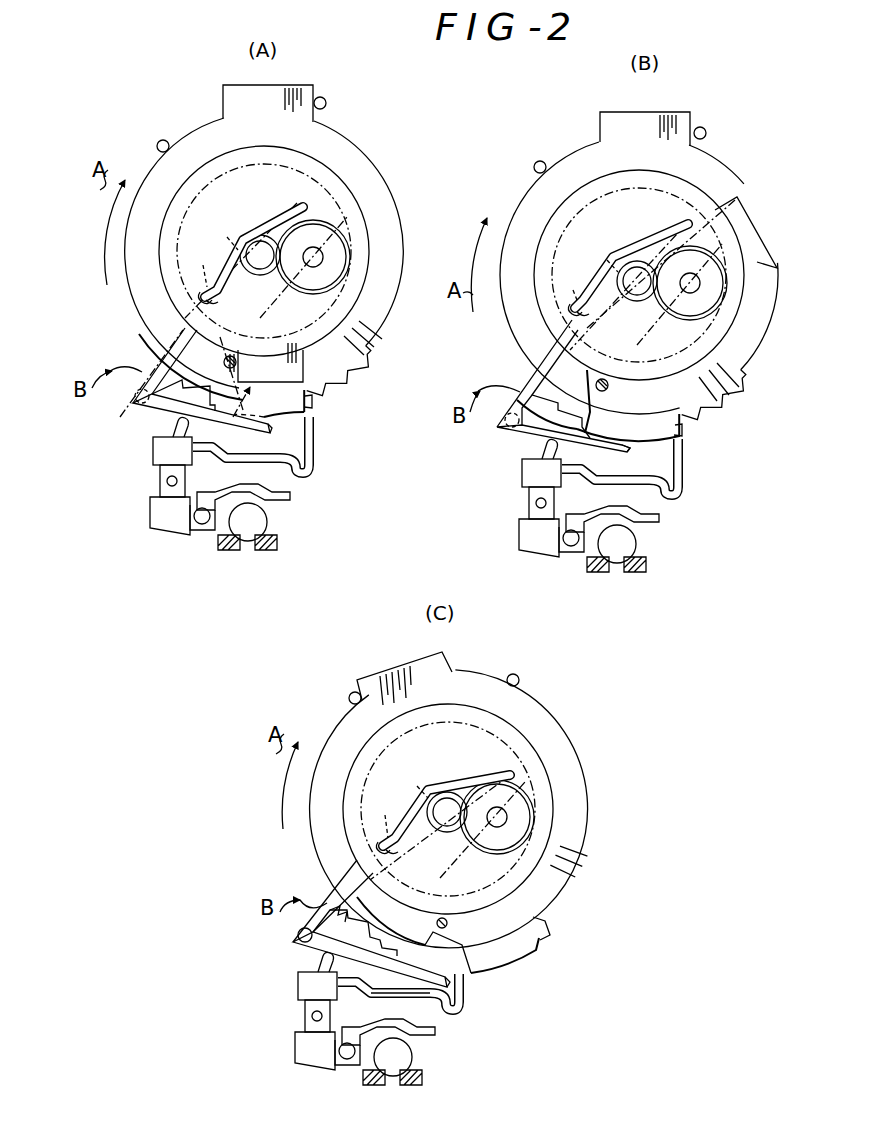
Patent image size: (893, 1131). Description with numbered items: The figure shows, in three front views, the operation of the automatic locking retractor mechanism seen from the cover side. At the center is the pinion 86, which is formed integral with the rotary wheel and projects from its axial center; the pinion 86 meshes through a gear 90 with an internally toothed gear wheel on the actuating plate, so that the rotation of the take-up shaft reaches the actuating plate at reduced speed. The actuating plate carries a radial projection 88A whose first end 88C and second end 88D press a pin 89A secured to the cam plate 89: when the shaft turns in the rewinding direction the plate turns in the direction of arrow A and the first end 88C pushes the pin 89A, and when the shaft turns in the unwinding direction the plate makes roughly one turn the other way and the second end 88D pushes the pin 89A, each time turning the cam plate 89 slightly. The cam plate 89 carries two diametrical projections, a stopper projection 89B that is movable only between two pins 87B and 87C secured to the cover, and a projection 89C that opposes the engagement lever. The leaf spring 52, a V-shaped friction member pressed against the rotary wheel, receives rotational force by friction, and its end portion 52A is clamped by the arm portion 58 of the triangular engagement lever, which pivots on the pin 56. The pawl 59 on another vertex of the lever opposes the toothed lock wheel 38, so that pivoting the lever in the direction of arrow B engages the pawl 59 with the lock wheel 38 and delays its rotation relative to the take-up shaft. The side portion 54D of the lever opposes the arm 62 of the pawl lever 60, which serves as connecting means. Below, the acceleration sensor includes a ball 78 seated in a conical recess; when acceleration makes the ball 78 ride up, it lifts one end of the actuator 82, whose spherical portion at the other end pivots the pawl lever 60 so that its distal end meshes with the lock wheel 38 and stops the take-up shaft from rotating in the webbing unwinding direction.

The lock wheel 38 is at (358, 385).
The leaf spring 52 is at (407, 510).
The end portion of the leaf spring 52A is at (393, 550).
The side portion of the engagement lever 54D is at (410, 995).
The pin 56 is at (136, 400).
The arm portion 58 is at (215, 303).
The pawl 59 is at (476, 1010).
The pawl lever 60 is at (306, 470).
The arm of the pawl lever 62 is at (172, 424).
The ball 78 is at (270, 520).
The actuator 82 is at (275, 492).
The pinion 86 is at (256, 235).
The pin 87B is at (164, 140).
The pin 87C is at (327, 104).
The projection 88A is at (757, 182).
The first end of the projection 88C is at (150, 342).
The second end of the projection 88D is at (313, 360).
The cam plate 89 is at (404, 253).
The pin 89A is at (224, 360).
The projection 89B is at (298, 102).
The projection 89C is at (314, 408).
The gear 90 is at (335, 226).